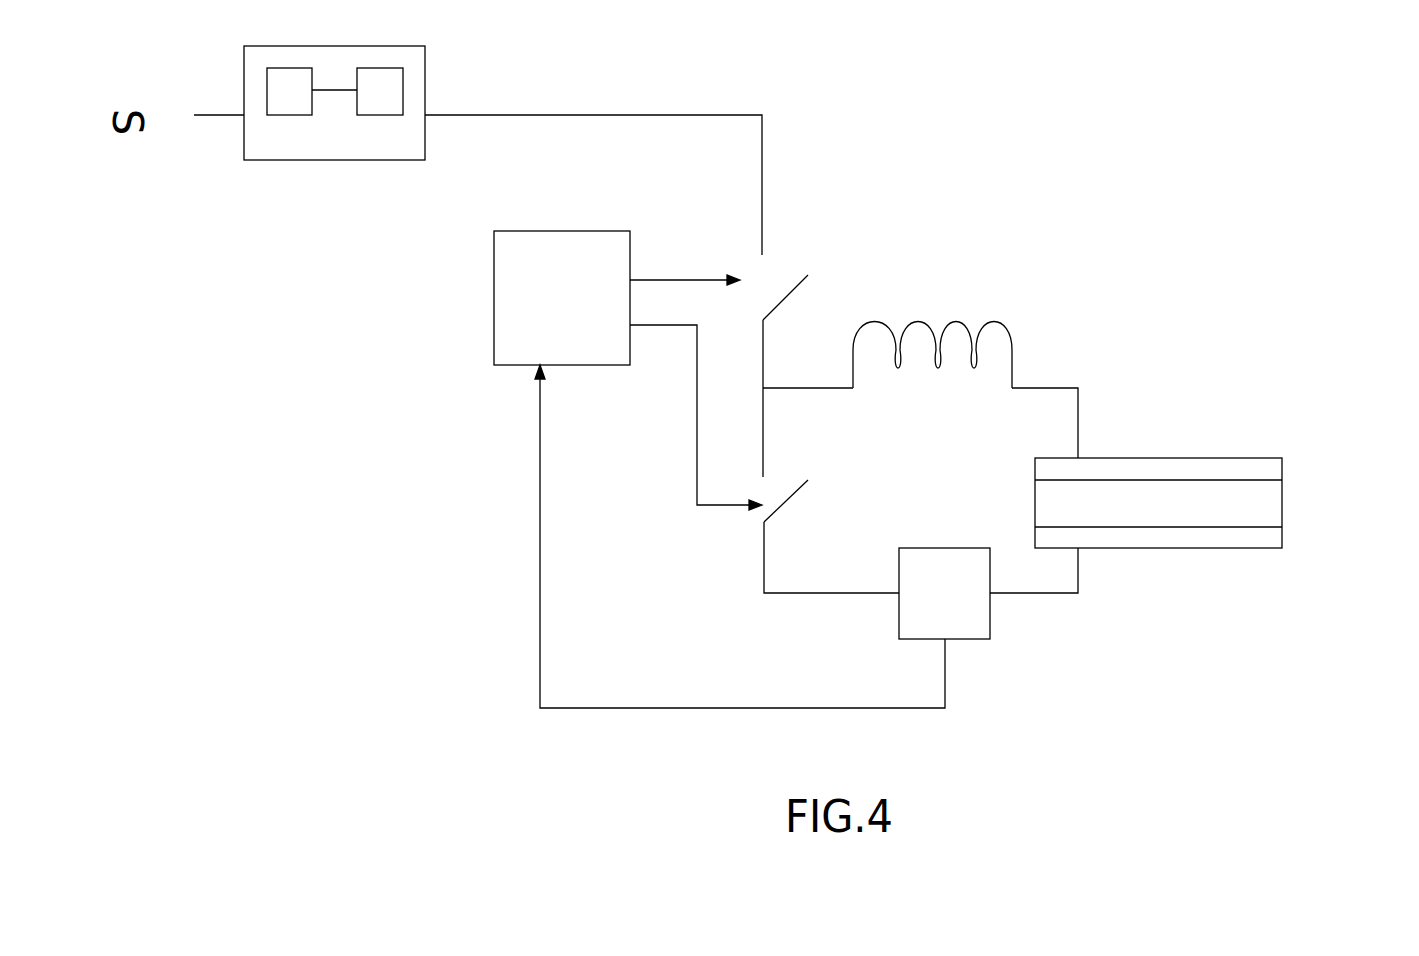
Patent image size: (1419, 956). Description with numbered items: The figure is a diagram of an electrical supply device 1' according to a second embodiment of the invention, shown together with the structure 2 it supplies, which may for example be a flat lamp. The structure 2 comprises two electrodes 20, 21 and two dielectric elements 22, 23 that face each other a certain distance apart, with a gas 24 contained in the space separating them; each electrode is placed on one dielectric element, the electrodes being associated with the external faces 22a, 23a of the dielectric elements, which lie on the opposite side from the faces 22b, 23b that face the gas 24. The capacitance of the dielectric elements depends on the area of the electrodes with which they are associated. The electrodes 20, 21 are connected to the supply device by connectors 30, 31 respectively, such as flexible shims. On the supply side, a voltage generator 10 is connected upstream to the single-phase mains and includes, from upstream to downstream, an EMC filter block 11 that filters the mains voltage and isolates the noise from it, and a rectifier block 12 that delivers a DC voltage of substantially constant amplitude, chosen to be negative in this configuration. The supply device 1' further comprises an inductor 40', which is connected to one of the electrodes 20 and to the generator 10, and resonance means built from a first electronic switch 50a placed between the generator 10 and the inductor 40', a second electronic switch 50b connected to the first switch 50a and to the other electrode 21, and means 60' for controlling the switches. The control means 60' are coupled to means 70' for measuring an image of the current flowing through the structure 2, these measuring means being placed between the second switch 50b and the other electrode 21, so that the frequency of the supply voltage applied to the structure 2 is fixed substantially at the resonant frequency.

The voltage generator 10 is at (426, 80).
The EMC filter block 11 is at (292, 127).
The rectifier block 12 is at (380, 127).
The electrical supply device 1' is at (336, 380).
The means for controlling the switches 60' is at (562, 343).
The first switch 50a is at (783, 303).
The second switch 50b is at (787, 505).
The inductor 40' is at (932, 294).
The connector 30 is at (1033, 390).
The connector 31 is at (1012, 595).
The means for measuring an image of the current 70' is at (896, 614).
The structure 2 is at (1263, 406).
The electrode 20 is at (1258, 457).
The electrode 21 is at (1238, 548).
The dielectric element 22 is at (1260, 480).
The external face 22a is at (1150, 492).
The face facing the gas 22b is at (1082, 507).
The dielectric element 23 is at (1238, 527).
The external face 23a is at (1192, 512).
The face facing the gas 23b is at (1150, 517).
The gas 24 is at (1282, 503).